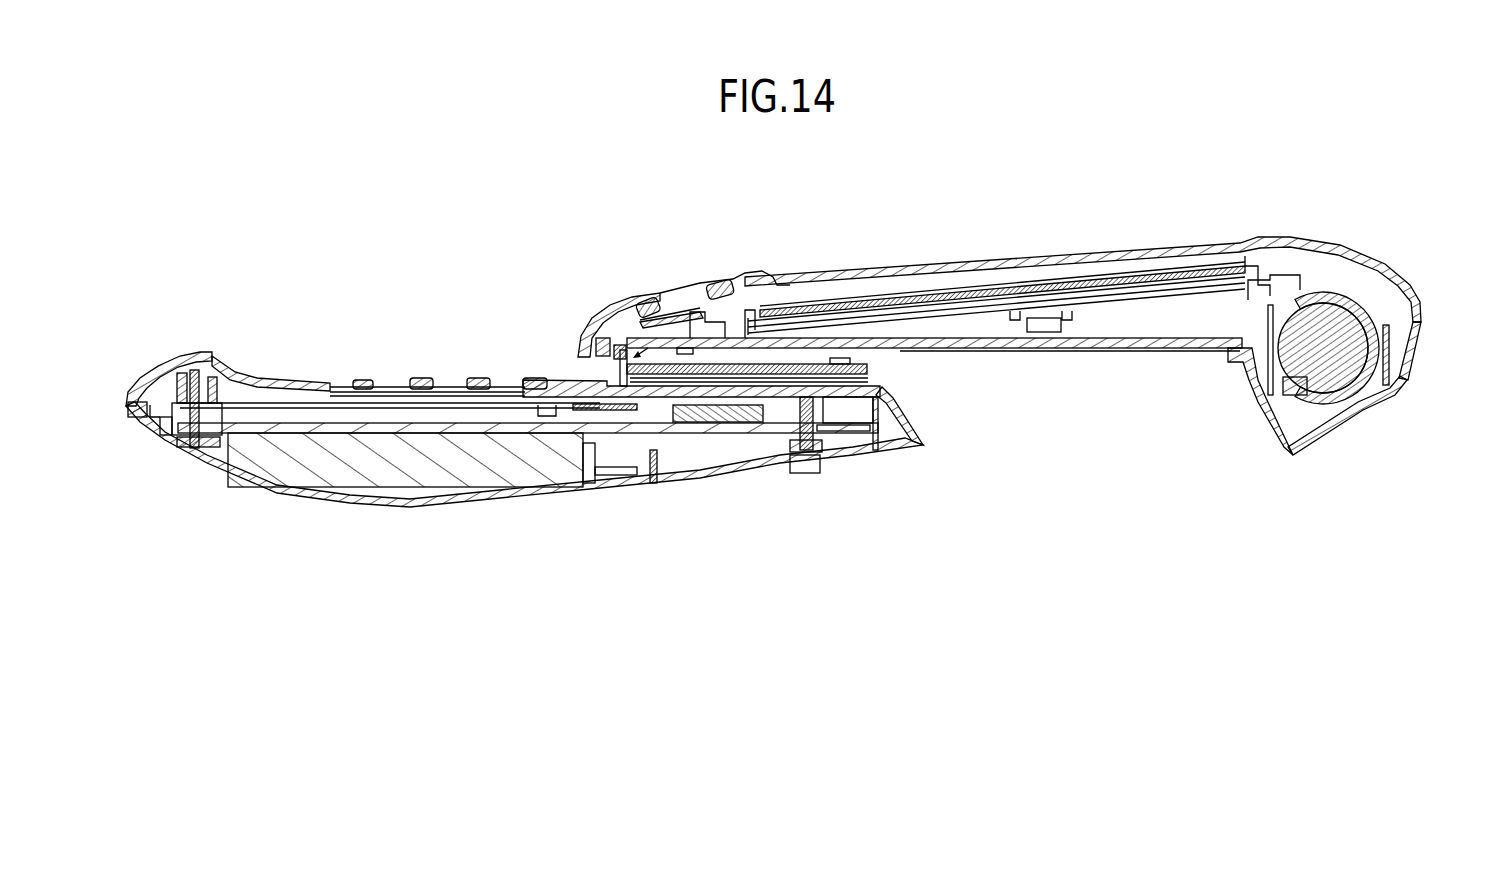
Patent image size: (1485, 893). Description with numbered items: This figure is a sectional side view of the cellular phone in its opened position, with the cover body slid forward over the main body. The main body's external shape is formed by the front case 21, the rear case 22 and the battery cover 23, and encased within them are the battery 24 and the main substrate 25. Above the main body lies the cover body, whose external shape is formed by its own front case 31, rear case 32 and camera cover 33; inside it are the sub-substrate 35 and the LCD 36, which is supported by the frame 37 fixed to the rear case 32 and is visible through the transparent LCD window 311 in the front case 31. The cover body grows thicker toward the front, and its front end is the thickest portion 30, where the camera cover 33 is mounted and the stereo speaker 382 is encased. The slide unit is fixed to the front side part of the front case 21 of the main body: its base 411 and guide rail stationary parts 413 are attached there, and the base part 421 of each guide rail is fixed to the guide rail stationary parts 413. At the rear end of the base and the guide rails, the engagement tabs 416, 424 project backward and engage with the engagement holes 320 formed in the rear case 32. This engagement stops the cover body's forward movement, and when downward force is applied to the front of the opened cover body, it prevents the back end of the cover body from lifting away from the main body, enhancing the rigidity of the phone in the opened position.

The front case 21 is at (165, 372).
The rear case 22 is at (687, 488).
The battery cover 23 is at (618, 493).
The battery 24 is at (498, 479).
The main substrate 25 is at (388, 426).
The thickest portion 30 is at (1331, 484).
The front case 31 is at (1377, 265).
The LCD window 311 is at (1157, 250).
The rear case 32 is at (1416, 318).
The camera cover 33 is at (1370, 406).
The sub-substrate 35 is at (1138, 342).
The LCD 36 is at (903, 308).
The frame 37 is at (1043, 318).
The stereo speaker 382 is at (1330, 305).
The engagement holes 320 is at (683, 320).
The base 411 is at (733, 408).
The guide rail stationary parts 413 is at (765, 385).
The engagement tab 416 is at (621, 355).
The base part 421 is at (730, 363).
The engagement tab 424 is at (612, 357).